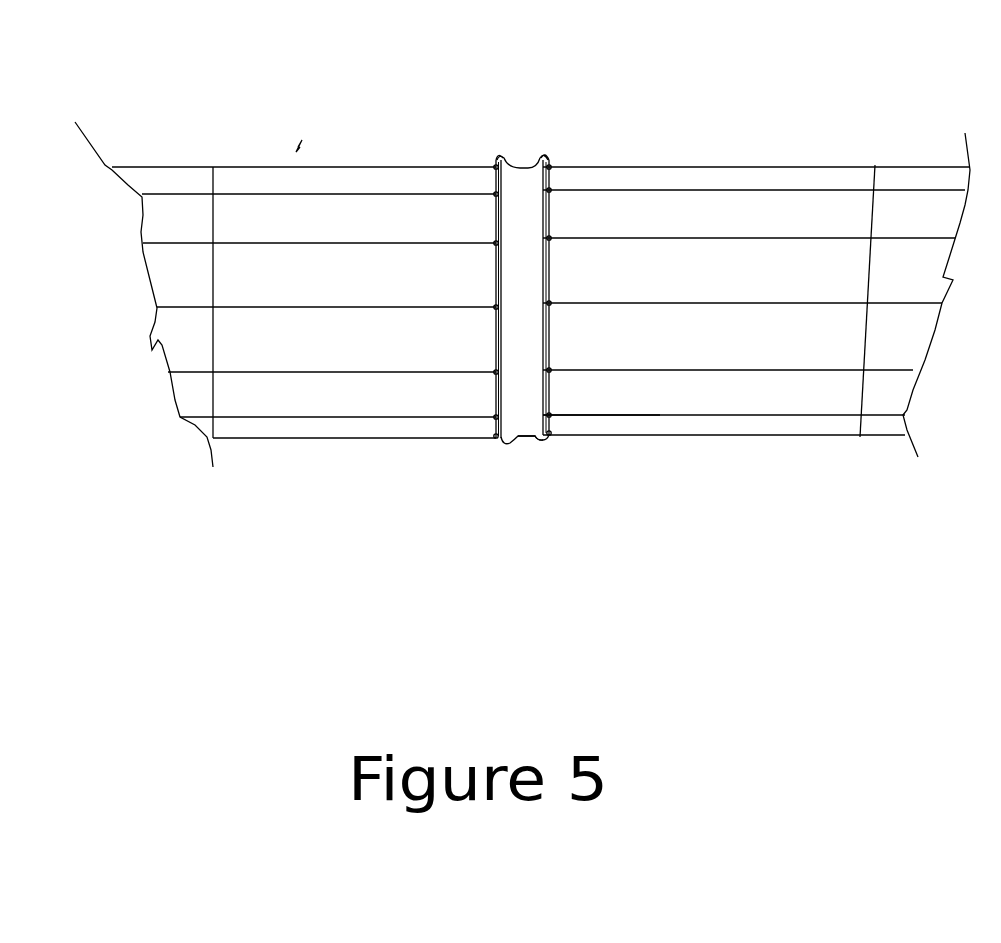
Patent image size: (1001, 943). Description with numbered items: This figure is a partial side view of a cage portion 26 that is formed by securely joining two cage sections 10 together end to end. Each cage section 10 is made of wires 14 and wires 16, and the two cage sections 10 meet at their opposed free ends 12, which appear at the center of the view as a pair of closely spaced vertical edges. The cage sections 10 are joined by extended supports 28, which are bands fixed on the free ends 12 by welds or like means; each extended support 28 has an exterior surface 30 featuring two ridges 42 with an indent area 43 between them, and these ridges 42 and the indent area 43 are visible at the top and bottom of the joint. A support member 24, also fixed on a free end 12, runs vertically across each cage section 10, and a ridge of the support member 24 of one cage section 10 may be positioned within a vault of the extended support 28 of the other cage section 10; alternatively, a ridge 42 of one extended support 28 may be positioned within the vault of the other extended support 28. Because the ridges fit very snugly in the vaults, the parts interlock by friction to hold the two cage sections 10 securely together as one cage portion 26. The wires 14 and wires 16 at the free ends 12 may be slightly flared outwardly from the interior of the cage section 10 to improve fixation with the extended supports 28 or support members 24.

The cage section 10 is at (352, 438).
The free end 12 is at (547, 163).
The wire 14 is at (647, 190).
The wire 16 is at (672, 415).
The support member 24 is at (215, 438).
The cage portion 26 is at (298, 147).
The extended support 28 is at (508, 443).
The exterior surface 30 is at (505, 157).
The ridge 42 is at (498, 158).
The indent area 43 is at (527, 443).